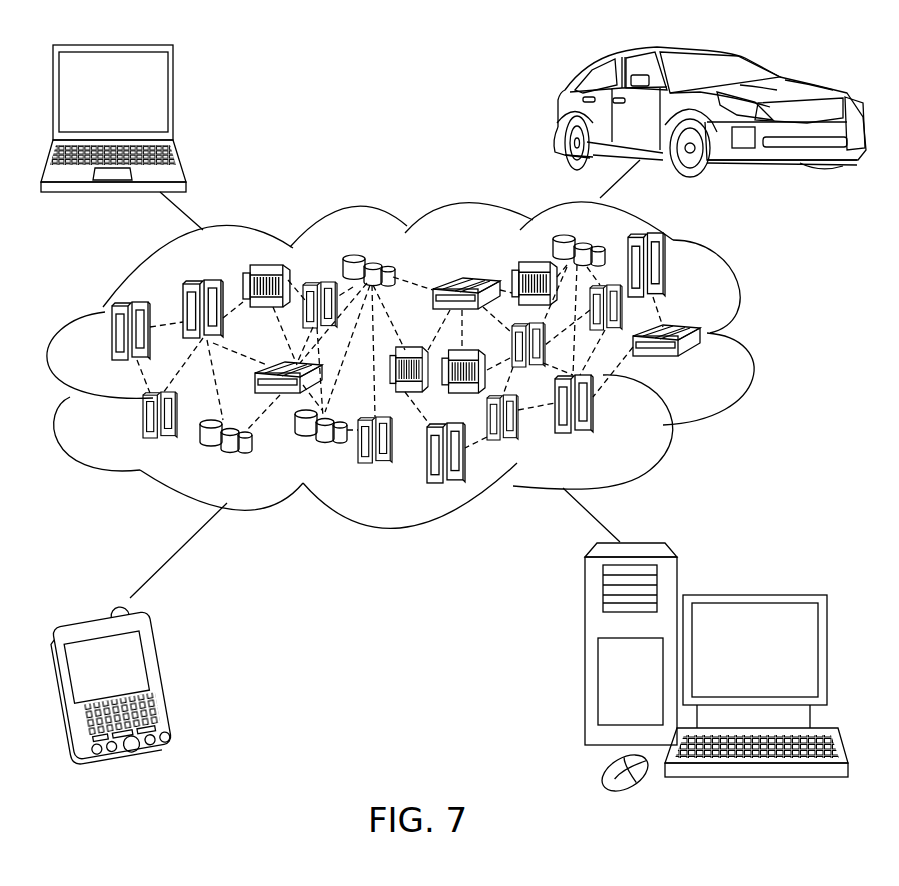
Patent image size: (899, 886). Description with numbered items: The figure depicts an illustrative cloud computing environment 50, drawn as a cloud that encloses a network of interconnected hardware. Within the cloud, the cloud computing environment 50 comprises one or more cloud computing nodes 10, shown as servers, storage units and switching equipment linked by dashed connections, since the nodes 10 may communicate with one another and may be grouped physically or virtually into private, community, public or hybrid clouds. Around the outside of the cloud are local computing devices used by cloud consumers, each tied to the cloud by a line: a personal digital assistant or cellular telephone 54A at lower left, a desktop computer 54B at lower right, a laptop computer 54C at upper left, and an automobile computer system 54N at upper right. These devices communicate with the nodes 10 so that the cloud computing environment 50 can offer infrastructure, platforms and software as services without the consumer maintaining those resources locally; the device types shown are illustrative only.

The cloud computing node 10 is at (708, 370).
The cloud computing environment 50 is at (753, 343).
The personal digital assistant or cellular telephone 54A is at (165, 675).
The desktop computer 54B is at (752, 595).
The laptop computer 54C is at (173, 98).
The automobile computer system 54N is at (558, 112).